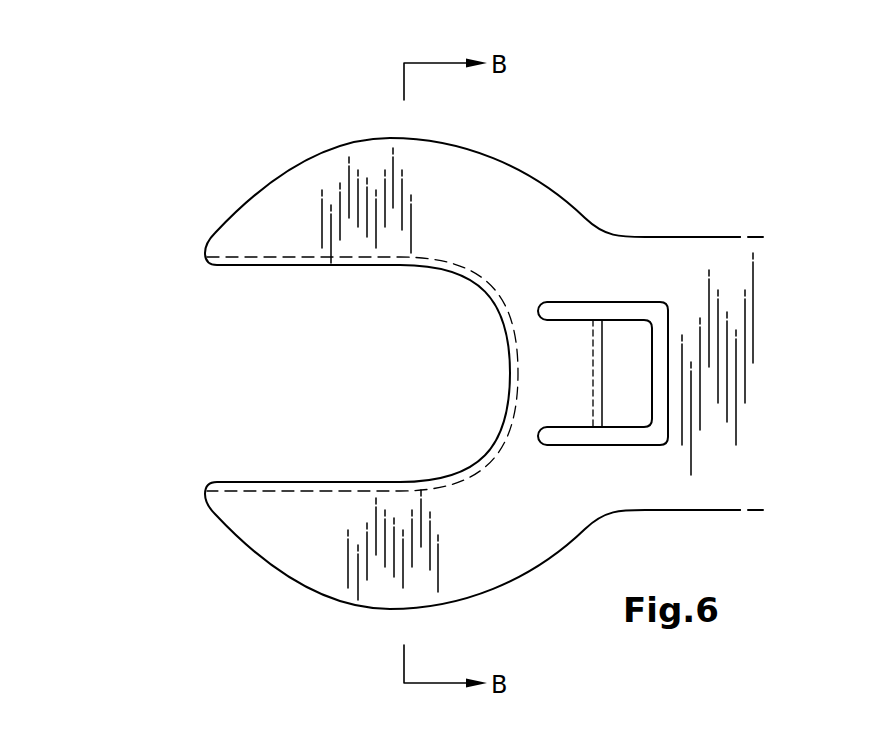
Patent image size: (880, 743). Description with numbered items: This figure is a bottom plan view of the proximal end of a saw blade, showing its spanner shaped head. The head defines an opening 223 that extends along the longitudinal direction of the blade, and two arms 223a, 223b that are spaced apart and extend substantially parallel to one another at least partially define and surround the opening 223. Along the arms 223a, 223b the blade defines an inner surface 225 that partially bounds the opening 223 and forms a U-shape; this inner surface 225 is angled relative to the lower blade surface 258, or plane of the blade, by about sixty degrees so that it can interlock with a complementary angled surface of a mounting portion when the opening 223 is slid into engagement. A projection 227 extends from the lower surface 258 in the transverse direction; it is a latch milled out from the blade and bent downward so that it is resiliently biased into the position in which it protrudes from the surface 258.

The opening 223 is at (405, 376).
The arm 223a is at (330, 580).
The arm 223b is at (300, 185).
The inner surface 225 is at (258, 266).
The projection 227 is at (633, 387).
The lower blade surface 258 is at (538, 220).